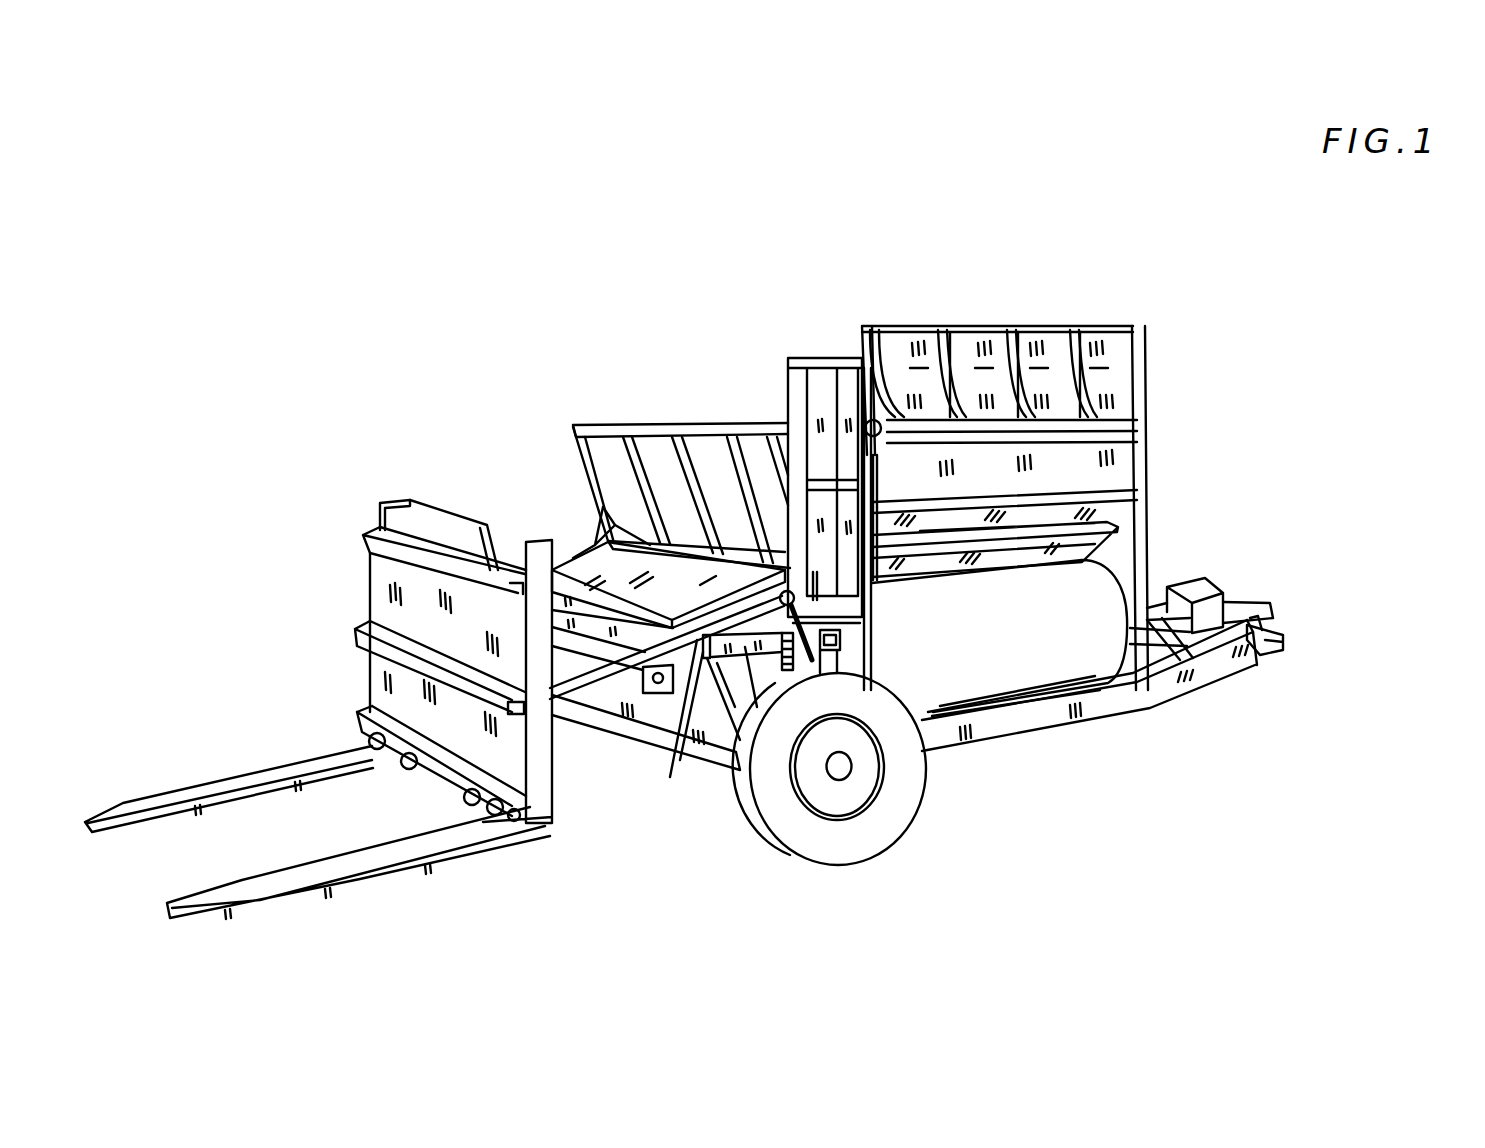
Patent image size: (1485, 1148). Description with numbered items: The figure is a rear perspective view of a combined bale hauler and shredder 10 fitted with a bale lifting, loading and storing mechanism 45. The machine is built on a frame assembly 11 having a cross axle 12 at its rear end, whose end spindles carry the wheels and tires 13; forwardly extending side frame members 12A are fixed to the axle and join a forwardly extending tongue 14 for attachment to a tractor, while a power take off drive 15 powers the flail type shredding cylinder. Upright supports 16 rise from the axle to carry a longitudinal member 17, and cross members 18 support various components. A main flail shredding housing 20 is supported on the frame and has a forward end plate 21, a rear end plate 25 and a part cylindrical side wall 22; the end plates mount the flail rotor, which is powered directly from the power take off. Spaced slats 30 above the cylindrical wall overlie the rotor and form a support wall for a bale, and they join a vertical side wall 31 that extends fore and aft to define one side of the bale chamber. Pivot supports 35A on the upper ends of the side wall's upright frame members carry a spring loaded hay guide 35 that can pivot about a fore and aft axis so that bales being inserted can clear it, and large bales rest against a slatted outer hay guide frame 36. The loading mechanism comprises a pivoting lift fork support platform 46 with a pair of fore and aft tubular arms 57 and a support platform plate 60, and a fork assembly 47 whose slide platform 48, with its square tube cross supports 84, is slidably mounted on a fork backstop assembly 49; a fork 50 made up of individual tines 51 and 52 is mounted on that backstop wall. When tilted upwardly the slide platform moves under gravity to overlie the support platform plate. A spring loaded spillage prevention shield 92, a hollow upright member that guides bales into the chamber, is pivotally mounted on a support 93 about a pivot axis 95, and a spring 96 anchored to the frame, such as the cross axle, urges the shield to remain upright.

The combined bale hauler and shredder 10 is at (1055, 752).
The frame assembly 11 is at (1107, 707).
The cross axle 12 is at (707, 737).
The side frame members 12A is at (945, 735).
The wheels and tires 13 is at (833, 848).
The tongue 14 is at (1213, 673).
The power take off drive 15 is at (1247, 600).
The upright supports 16 is at (735, 690).
The longitudinal member 17 is at (727, 658).
The cross members 18 is at (693, 650).
The main flail shredding housing 20 is at (1108, 562).
The forward end plate 21 is at (1142, 530).
The part cylindrical side wall 22 is at (1053, 670).
The rear end plate 25 is at (857, 652).
The slats 30 is at (1107, 510).
The vertical side wall 31 is at (1088, 458).
The hay guide 35 is at (1037, 347).
The pivot supports 35A is at (880, 417).
The outer hay guide frame 36 is at (635, 432).
The bale lifting, loading and storing mechanism 45 is at (462, 486).
The lift fork support platform 46 is at (566, 483).
The fork assembly 47 is at (358, 613).
The slide platform 48 is at (383, 582).
The fork backstop assembly 49 is at (543, 760).
The fork 50 is at (290, 760).
The tine 51 is at (227, 790).
The tine 52 is at (318, 885).
The tubular arms 57 is at (567, 707).
The support platform plate 60 is at (575, 555).
The square tube cross supports 84 is at (474, 586).
The spillage prevention shield 92 is at (827, 357).
The support 93 is at (870, 633).
The pivot axis 95 is at (745, 585).
The spring 96 is at (853, 657).